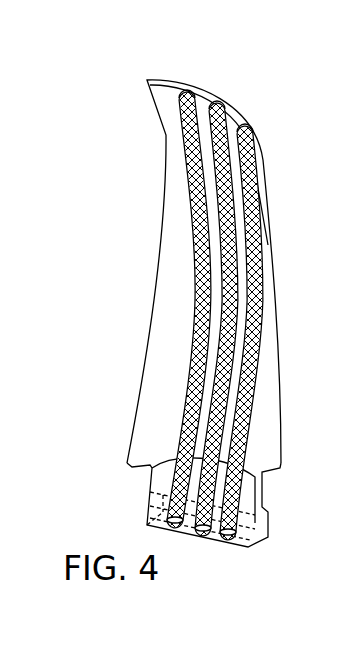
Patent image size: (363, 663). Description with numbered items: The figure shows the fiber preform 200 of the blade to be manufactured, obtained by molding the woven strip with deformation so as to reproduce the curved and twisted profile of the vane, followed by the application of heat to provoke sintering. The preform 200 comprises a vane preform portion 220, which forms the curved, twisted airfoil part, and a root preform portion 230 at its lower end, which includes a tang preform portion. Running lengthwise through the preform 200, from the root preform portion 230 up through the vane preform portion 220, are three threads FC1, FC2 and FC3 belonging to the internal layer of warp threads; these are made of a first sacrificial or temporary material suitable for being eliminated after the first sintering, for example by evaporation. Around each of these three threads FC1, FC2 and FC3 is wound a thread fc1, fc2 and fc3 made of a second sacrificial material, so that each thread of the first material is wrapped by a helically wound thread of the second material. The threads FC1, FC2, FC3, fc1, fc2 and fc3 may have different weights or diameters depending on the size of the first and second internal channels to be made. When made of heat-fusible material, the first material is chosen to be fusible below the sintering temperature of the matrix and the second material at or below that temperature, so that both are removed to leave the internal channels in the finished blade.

The fiber preform 200 is at (205, 313).
The vane preform portion 220 is at (281, 236).
The root preform portion 230 is at (139, 482).
The thread made of a second sacrificial material fc1 is at (180, 135).
The thread made of a second sacrificial material fc2 is at (237, 357).
The thread made of a second sacrificial material fc3 is at (262, 193).
The thread of the internal warp layer made of a first sacrificial material FC1 is at (190, 92).
The thread of the internal warp layer made of a first sacrificial material FC2 is at (222, 102).
The thread of the internal warp layer made of a first sacrificial material FC3 is at (250, 125).